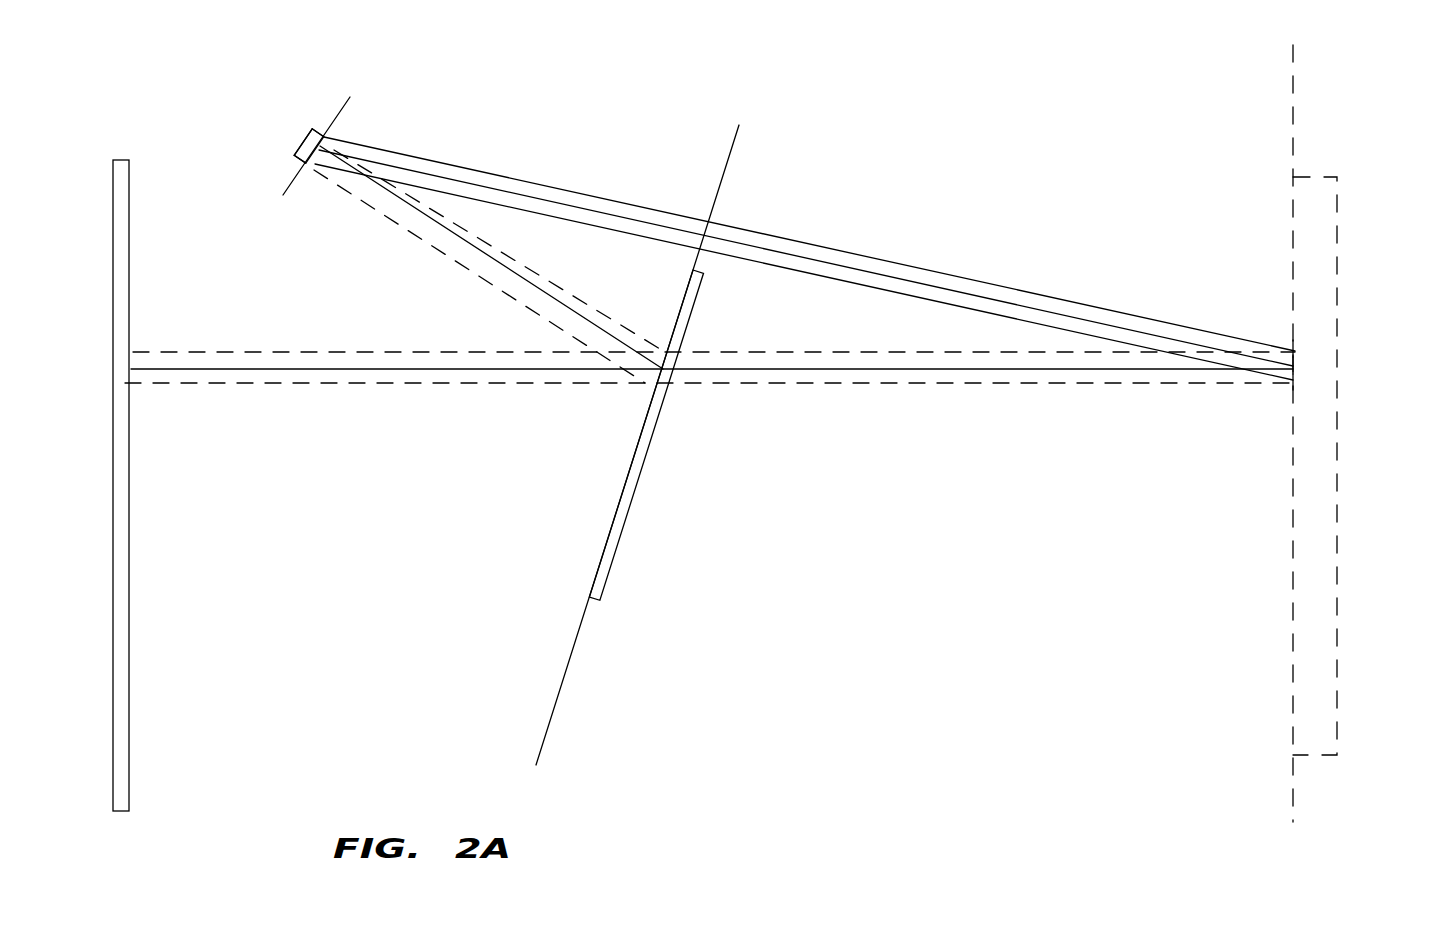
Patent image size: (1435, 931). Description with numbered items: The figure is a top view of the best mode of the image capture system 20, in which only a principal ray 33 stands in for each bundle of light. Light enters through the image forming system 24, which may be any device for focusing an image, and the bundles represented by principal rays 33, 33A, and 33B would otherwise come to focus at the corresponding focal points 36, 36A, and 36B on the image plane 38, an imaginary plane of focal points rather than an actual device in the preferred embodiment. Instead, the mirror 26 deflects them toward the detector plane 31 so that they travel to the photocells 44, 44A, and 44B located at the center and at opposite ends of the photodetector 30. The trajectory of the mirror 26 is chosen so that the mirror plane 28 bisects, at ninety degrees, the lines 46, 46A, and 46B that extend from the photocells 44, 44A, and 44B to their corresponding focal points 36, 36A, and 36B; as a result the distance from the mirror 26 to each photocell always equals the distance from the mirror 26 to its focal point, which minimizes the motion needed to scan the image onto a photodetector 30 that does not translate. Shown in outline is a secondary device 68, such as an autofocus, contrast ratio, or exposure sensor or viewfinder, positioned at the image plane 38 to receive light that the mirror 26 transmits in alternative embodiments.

The image capture system 20 is at (740, 786).
The image forming system 24 is at (130, 670).
The mirror 26 is at (623, 522).
The mirror plane 28 is at (565, 672).
The photodetector 30 is at (308, 130).
The detector plane 31 is at (287, 188).
The principal ray 33 is at (230, 370).
The principal ray 33A is at (300, 384).
The principal ray 33B is at (272, 352).
The focal point 36 is at (1293, 366).
The focal point 36A is at (1295, 380).
The focal point 36B is at (1295, 351).
The image plane 38 is at (1293, 783).
The photocell 44 is at (305, 140).
The photocell 44A is at (306, 163).
The photocell 44B is at (325, 137).
The line 46 is at (542, 195).
The line 46A is at (987, 316).
The line 46B is at (892, 262).
The secondary device 68 is at (1320, 553).